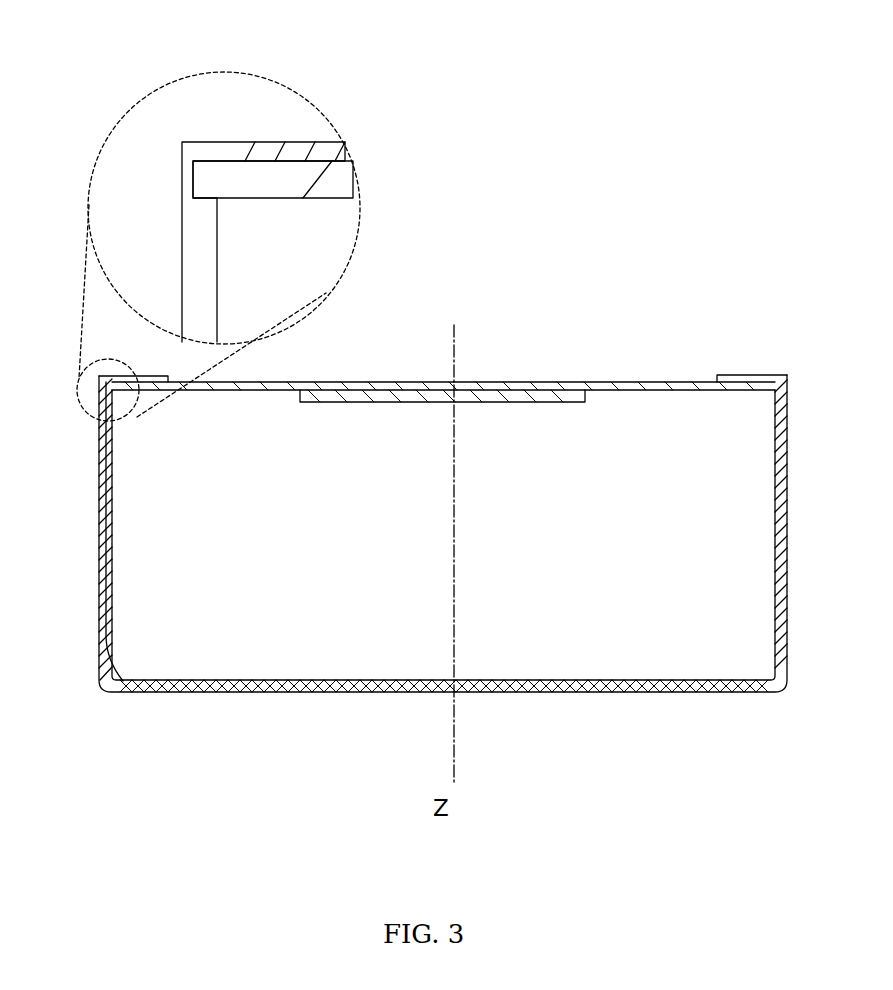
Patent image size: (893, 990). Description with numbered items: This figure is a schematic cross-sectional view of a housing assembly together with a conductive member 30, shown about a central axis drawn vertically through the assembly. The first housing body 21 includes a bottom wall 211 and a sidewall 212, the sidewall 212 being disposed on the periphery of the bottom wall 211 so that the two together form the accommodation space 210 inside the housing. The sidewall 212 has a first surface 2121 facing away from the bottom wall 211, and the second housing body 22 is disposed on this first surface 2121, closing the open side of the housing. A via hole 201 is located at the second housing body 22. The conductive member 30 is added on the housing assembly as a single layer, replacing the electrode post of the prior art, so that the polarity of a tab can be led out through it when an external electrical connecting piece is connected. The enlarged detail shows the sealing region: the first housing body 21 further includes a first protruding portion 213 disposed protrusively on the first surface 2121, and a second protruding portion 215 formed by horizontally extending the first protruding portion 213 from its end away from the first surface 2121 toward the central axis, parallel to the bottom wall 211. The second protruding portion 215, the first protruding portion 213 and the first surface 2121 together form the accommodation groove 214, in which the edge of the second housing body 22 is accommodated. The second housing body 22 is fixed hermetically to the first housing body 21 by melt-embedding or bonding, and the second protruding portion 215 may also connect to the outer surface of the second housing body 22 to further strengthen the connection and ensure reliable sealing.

The first housing body 21 is at (443, 464).
The bottom wall 211 is at (195, 686).
The sidewall 212 is at (208, 752).
The first surface 2121 is at (195, 197).
The first protruding portion 213 is at (200, 170).
The accommodation groove 214 is at (193, 193).
The second protruding portion 215 is at (320, 150).
The second housing body 22 is at (632, 382).
The via hole 201 is at (378, 379).
The accommodation space 210 is at (506, 668).
The conductive member 30 is at (482, 392).